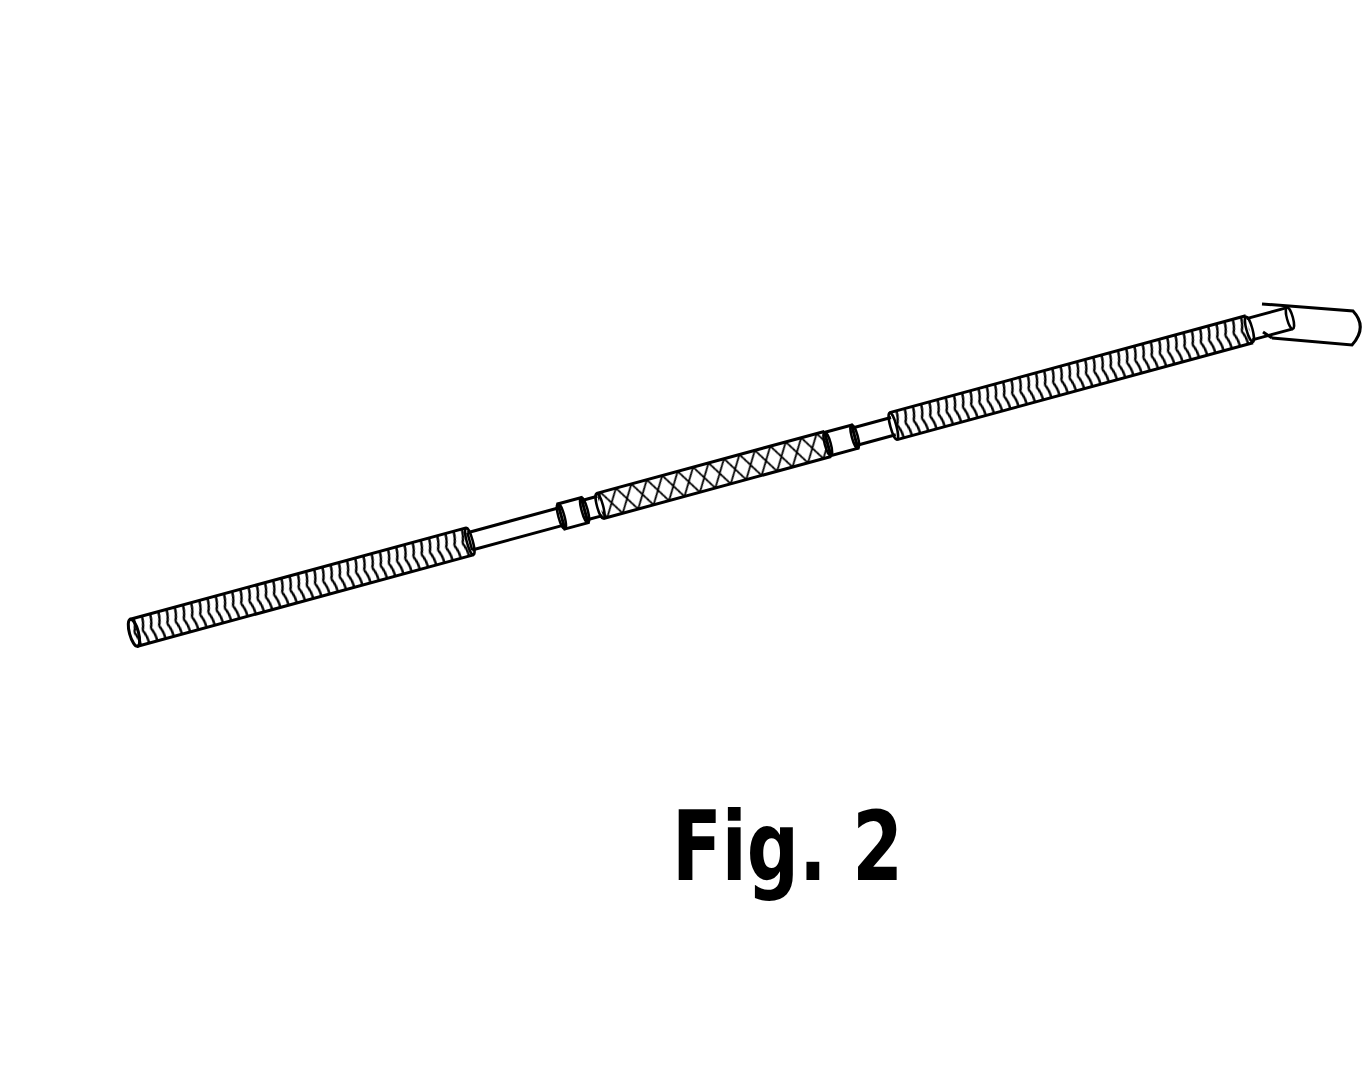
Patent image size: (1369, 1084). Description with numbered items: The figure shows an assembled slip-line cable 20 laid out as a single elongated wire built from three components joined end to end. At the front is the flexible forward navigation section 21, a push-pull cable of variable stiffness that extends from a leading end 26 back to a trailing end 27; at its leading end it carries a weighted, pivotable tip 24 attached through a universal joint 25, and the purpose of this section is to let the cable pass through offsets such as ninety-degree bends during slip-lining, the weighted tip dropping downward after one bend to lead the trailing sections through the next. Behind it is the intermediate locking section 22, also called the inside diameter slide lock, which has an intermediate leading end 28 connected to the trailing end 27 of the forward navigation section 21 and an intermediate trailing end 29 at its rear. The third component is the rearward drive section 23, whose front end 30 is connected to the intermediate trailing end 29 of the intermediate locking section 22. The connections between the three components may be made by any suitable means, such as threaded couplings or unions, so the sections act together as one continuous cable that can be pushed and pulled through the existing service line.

The slip-line cable 20 is at (915, 225).
The forward navigation section 21 is at (895, 485).
The intermediate locking section 22 is at (852, 565).
The rearward drive section 23 is at (62, 670).
The weighted, pivotable tip 24 is at (1327, 305).
The universal joint 25 is at (1257, 318).
The leading end 26 is at (1270, 342).
The trailing end 27 is at (888, 413).
The intermediate leading end 28 is at (828, 462).
The intermediate trailing end 29 is at (600, 493).
The front end 30 is at (468, 527).